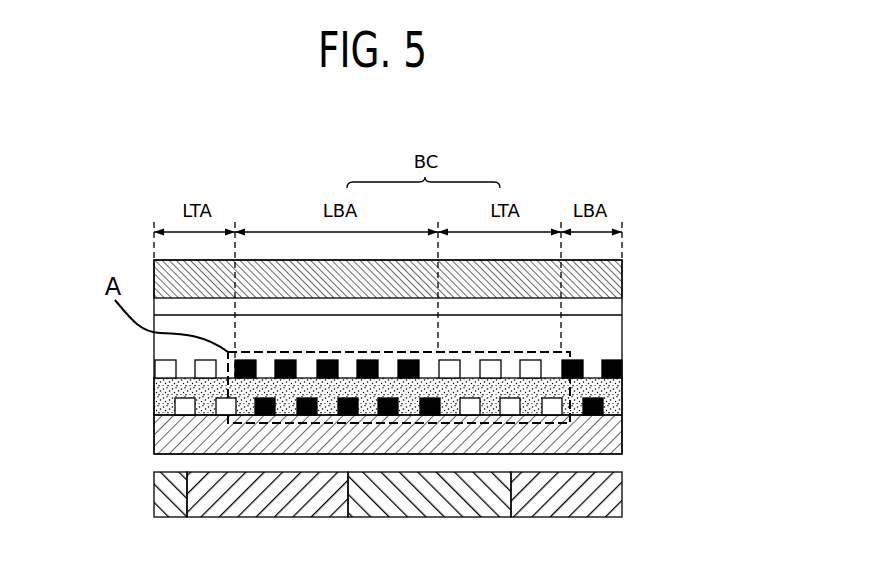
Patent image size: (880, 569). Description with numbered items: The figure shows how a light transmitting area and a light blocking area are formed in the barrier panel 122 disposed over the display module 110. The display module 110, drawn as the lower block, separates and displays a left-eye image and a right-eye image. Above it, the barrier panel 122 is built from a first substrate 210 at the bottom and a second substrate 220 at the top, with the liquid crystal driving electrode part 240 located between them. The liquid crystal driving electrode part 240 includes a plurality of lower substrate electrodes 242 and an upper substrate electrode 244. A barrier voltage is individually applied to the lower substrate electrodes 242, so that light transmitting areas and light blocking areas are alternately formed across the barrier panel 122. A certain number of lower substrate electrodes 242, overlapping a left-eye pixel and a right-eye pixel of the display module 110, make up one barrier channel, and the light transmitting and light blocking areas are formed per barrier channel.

The display module 110 is at (124, 499).
The barrier panel 122 is at (416, 357).
The first substrate 210 is at (622, 432).
The second substrate 220 is at (622, 273).
The liquid crystal driving electrode part 240 is at (464, 356).
The lower substrate electrodes 242 is at (435, 387).
The upper substrate electrode 244 is at (617, 305).